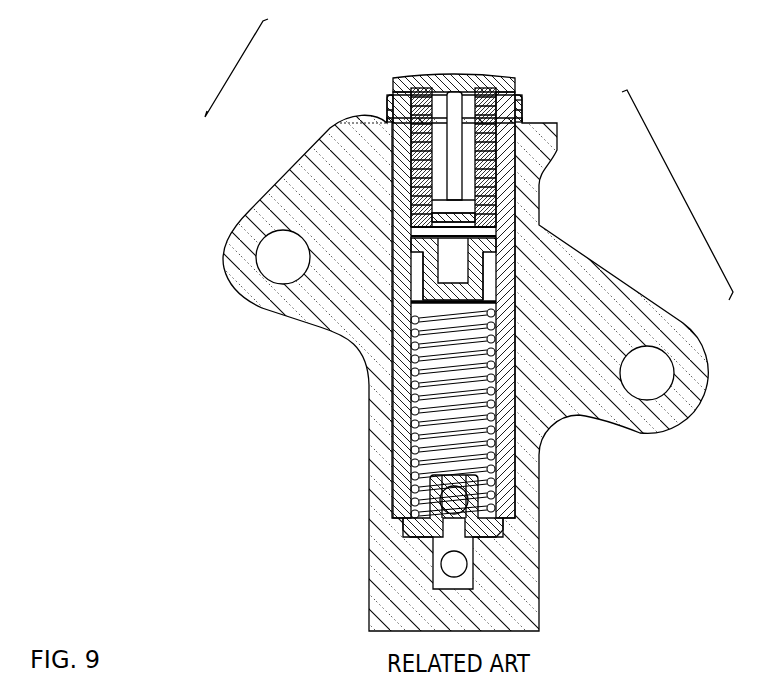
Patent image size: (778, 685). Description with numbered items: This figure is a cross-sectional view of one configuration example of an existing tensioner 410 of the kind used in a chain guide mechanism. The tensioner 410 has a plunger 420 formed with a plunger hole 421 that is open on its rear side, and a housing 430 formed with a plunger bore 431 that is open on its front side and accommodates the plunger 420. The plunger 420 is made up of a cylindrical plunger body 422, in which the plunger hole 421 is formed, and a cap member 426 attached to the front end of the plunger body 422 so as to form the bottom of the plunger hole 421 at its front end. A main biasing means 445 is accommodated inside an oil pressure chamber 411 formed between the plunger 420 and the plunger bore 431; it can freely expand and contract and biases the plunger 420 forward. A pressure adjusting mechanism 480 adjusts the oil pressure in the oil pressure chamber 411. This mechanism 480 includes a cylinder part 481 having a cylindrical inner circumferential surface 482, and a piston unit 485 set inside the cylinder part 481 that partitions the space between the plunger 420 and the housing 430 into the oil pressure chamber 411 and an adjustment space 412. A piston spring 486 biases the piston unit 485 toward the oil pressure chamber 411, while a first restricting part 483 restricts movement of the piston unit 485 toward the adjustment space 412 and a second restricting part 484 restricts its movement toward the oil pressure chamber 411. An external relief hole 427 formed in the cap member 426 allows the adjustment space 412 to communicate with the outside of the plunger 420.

The tensioner 410 is at (514, 74).
The oil pressure chamber 411 is at (408, 456).
The adjustment space 412 is at (444, 222).
The plunger 420 is at (229, 68).
The plunger hole 421 is at (413, 385).
The plunger body 422 is at (387, 117).
The cap member 426 is at (393, 80).
The external relief hole 427 is at (522, 108).
The housing 430 is at (372, 572).
The plunger bore 431 is at (430, 505).
The main biasing means 445 is at (464, 491).
The pressure adjusting mechanism 480 is at (677, 195).
The cylinder part 481 is at (497, 312).
The cylindrical inner circumferential surface 482 is at (440, 300).
The first restricting part 483 is at (497, 165).
The second restricting part 484 is at (500, 228).
The piston unit 485 is at (490, 290).
The piston spring 486 is at (500, 205).